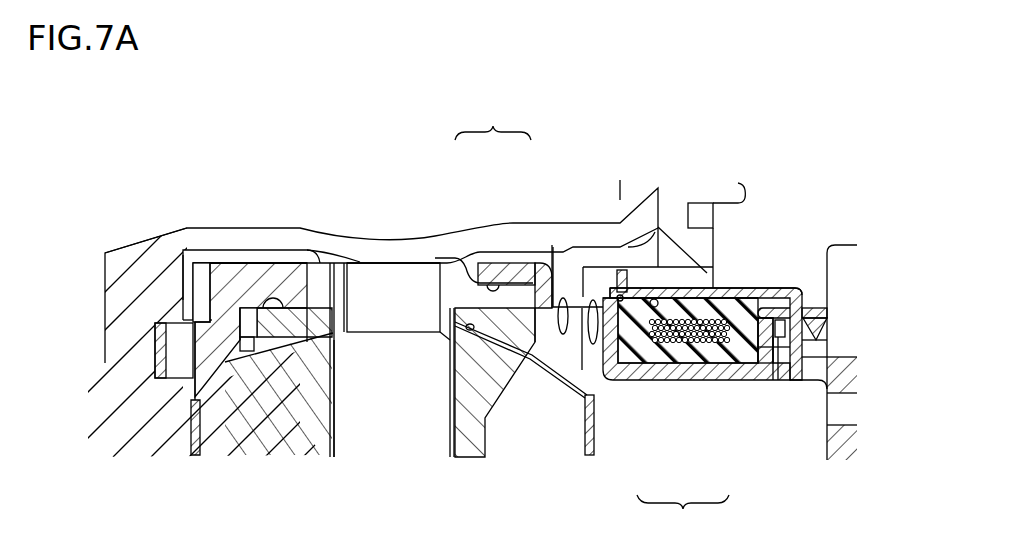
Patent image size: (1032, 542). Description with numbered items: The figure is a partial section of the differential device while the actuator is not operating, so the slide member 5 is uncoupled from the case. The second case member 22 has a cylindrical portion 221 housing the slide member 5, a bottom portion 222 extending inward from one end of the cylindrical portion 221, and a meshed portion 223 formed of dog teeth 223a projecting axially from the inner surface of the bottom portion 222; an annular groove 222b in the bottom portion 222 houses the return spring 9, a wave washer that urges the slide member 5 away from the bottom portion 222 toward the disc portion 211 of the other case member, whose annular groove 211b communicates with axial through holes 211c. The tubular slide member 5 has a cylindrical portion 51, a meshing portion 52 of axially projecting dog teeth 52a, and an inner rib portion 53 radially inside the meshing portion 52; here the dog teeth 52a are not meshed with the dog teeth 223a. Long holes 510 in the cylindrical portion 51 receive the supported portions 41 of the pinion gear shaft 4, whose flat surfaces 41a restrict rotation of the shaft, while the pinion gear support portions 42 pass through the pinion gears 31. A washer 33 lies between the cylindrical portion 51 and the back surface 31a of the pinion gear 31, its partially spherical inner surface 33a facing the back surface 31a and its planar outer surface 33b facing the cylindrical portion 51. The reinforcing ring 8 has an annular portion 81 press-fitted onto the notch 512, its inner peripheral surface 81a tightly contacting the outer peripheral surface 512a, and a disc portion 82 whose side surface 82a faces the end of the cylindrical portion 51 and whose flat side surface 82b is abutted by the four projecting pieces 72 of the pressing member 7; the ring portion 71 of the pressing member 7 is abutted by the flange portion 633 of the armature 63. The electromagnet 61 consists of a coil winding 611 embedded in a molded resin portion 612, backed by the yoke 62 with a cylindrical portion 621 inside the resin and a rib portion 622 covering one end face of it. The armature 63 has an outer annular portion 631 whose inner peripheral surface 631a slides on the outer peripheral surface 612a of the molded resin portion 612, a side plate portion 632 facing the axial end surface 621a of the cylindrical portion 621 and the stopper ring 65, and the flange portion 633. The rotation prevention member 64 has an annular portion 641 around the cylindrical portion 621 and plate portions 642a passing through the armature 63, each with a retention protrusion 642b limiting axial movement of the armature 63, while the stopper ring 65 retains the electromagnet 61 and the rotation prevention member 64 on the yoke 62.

The second case member 22 is at (112, 216).
The cylindrical portion 221 is at (430, 236).
The bottom portion 222 is at (118, 300).
The annular groove 222b is at (170, 383).
The meshed portion 223 is at (181, 245).
The dog teeth 223a is at (188, 273).
The slide member 5 is at (228, 258).
The cylindrical portion 51 is at (263, 267).
The long holes 510 is at (320, 264).
The notch 512 is at (471, 258).
The outer peripheral surface 512a is at (452, 328).
The meshing portion 52 is at (201, 258).
The dog teeth 52a is at (202, 292).
The inner rib portion 53 is at (192, 348).
The return spring 9 is at (170, 340).
The pinion gear shaft 4 is at (372, 273).
The supported portions 41 is at (378, 308).
The flat surfaces 41a is at (352, 262).
The pinion gear support portions 42 is at (378, 445).
The pinion gears 31 is at (467, 412).
The back surface 31a is at (448, 335).
The washer 33 is at (260, 345).
The inner surface 33a is at (280, 335).
The outer surface 33b is at (292, 337).
The reinforcing ring 8 is at (493, 123).
The annular portion 81 is at (510, 270).
The inner peripheral surface 81a is at (470, 360).
The disc portion 82 is at (542, 285).
The side surface 82a is at (524, 360).
The side surface 82b is at (560, 400).
The pressing member 7 is at (580, 322).
The ring portion 71 is at (617, 243).
The projecting pieces 72 is at (563, 277).
The electromagnet 61 is at (683, 512).
The coil winding 611 is at (652, 378).
The molded resin portion 612 is at (708, 363).
The outer peripheral surface 612a is at (683, 292).
The yoke 62 is at (792, 388).
The cylindrical portion 621 is at (737, 373).
The axial end surface 621a is at (800, 374).
The rib portion 622 is at (583, 330).
The armature 63 is at (770, 289).
The outer annular portion 631 is at (713, 287).
The inner peripheral surface 631a is at (660, 287).
The side plate portion 632 is at (800, 293).
The flange portion 633 is at (620, 285).
The rotation prevention member 64 is at (788, 298).
The annular portion 641 is at (766, 380).
The plate portion 642a is at (817, 313).
The retention protrusion 642b is at (820, 337).
The stopper ring 65 is at (805, 345).
The disc portion 211 is at (822, 420).
The annular groove 211b is at (700, 273).
The through holes 211c is at (589, 430).